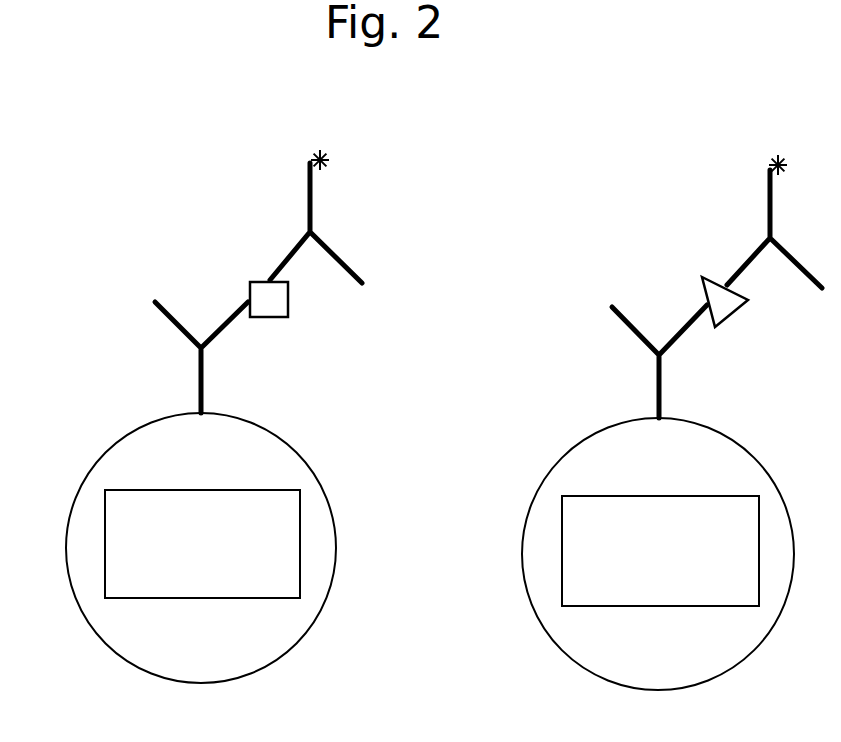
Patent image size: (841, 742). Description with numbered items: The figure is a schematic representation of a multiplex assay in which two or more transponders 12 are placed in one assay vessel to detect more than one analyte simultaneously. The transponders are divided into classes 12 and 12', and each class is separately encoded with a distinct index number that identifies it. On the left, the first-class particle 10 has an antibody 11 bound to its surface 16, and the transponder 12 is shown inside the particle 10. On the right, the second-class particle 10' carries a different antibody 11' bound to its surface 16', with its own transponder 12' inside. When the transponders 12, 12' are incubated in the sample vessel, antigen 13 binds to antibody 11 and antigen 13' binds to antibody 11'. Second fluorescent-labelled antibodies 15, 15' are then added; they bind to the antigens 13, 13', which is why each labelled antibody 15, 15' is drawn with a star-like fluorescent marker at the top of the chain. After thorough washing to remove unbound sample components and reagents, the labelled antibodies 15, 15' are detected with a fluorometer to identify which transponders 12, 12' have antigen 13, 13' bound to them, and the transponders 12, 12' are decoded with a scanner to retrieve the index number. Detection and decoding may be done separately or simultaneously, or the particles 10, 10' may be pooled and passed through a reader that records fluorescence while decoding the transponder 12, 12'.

The particle 10 is at (193, 416).
The antibody 11 is at (258, 357).
The transponder 12 is at (158, 582).
The antigen 13 is at (190, 270).
The second fluorescent-labelled antibody 15 is at (273, 216).
The surface 16 is at (221, 533).
The particle 10' is at (651, 422).
The antibody 11' is at (719, 361).
The transponder 12' is at (617, 588).
The antigen 13' is at (649, 277).
The second fluorescent-labelled antibody 15' is at (731, 221).
The surface 16' is at (680, 539).